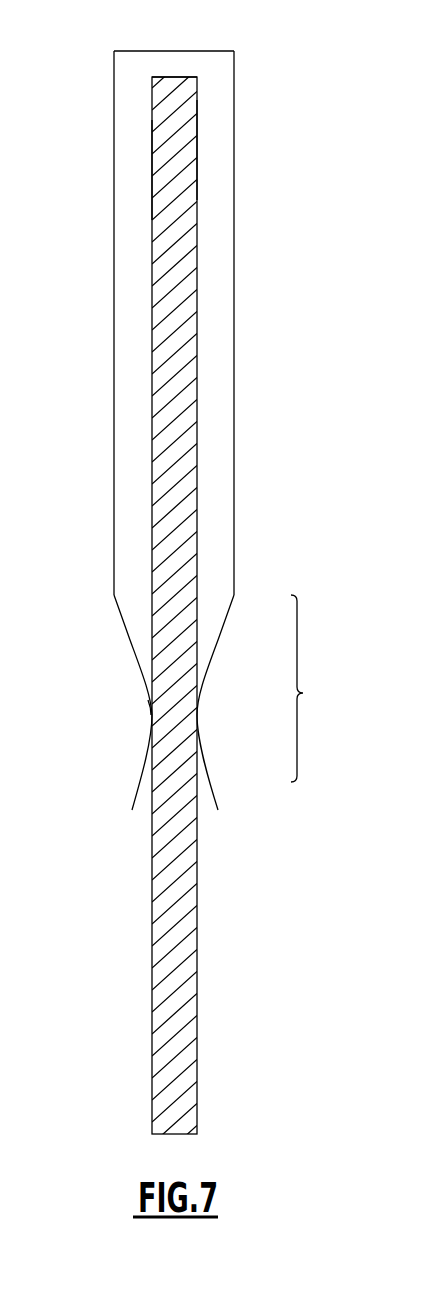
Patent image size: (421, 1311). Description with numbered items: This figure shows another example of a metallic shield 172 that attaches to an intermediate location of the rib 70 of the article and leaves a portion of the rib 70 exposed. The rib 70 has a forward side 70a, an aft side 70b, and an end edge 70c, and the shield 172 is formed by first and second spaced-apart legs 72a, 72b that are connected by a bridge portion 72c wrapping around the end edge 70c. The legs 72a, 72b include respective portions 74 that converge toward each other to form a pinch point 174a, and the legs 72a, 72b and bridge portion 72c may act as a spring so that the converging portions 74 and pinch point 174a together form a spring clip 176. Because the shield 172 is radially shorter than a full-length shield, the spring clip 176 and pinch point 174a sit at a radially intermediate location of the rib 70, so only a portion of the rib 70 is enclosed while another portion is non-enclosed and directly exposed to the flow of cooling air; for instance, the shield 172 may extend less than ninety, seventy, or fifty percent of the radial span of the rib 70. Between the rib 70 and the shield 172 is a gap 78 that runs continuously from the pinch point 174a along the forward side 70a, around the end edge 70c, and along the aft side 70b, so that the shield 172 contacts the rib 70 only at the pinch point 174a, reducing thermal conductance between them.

The rib 70 is at (198, 893).
The forward side 70a is at (152, 172).
The aft side 70b is at (197, 147).
The end edge 70c is at (199, 65).
The first leg 72a is at (234, 235).
The second leg 72b is at (115, 295).
The bridge portion 72c is at (165, 51).
The converging portions 74 is at (116, 641).
The gap 78 is at (213, 320).
The metallic shield 172 is at (199, 408).
The pinch point 174a is at (138, 728).
The spring clip 176 is at (303, 693).